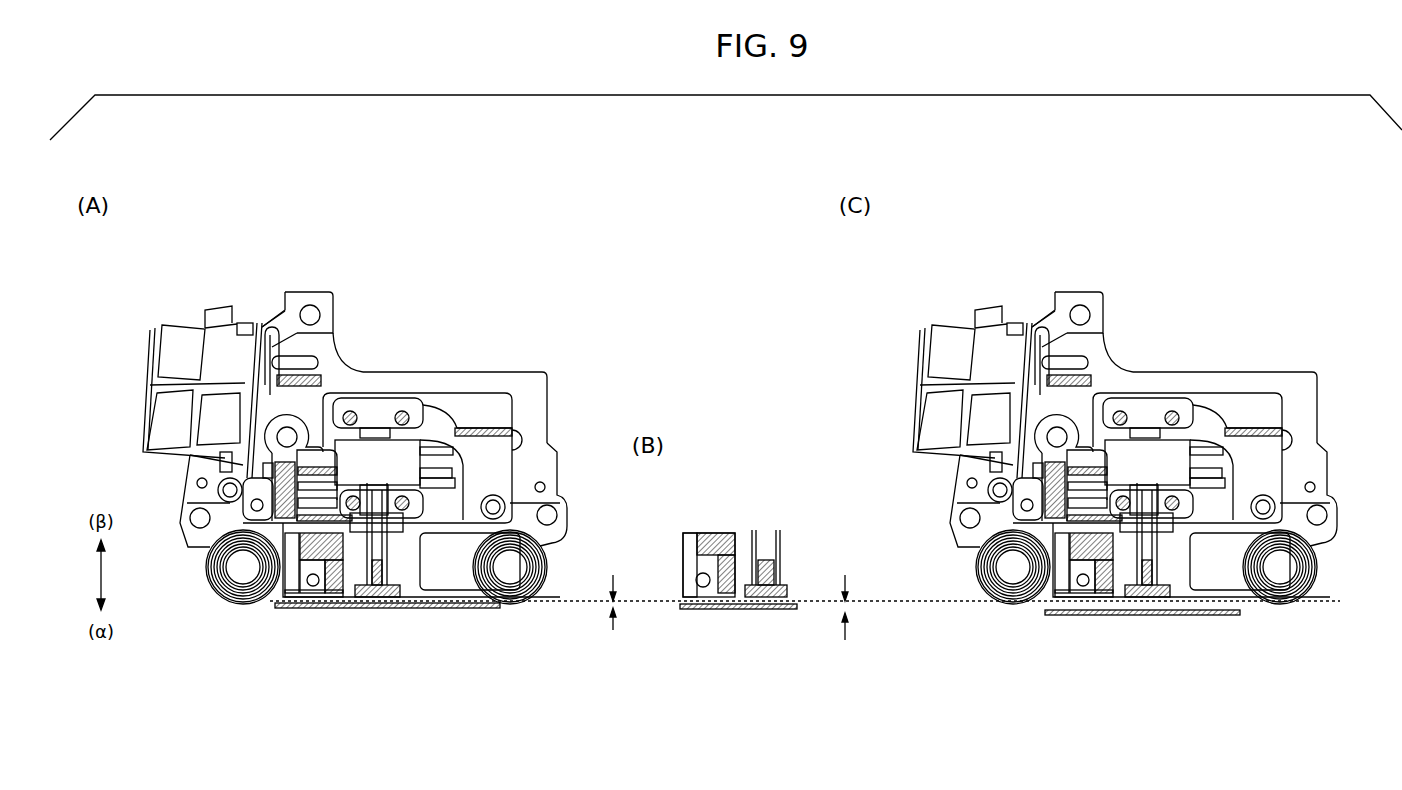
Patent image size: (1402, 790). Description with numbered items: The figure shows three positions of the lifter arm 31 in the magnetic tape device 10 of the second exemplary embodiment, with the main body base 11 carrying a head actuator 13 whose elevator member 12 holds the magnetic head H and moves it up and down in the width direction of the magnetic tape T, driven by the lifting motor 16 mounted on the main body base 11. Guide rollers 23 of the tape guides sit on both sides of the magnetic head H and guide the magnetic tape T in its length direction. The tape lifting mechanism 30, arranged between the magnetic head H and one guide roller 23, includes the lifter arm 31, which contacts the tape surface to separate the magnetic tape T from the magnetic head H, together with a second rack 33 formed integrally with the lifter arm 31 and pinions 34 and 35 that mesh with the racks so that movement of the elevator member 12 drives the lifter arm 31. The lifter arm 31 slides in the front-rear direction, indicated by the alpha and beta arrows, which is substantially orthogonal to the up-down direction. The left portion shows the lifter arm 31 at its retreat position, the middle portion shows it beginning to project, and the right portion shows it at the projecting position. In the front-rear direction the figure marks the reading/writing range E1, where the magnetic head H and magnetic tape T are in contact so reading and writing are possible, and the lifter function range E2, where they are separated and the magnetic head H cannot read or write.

The magnetic tape device 10 is at (430, 305).
The main body base 11 is at (530, 410).
The elevator member 12 is at (487, 372).
The head actuator 13 is at (367, 388).
The lifting motor 16 is at (181, 338).
The guide roller 23 is at (236, 600).
The tape lifting mechanism 30 is at (350, 625).
The lifter arm 31 is at (335, 600).
The second rack 33 is at (327, 600).
The pinion 34 is at (301, 595).
The pinion 35 is at (318, 600).
The magnetic head H is at (380, 603).
The magnetic tape T is at (448, 603).
The reading/writing range E1 is at (622, 601).
The lifter function range E2 is at (860, 606).